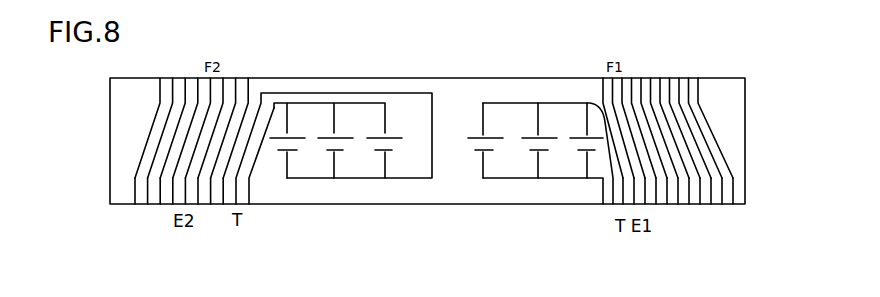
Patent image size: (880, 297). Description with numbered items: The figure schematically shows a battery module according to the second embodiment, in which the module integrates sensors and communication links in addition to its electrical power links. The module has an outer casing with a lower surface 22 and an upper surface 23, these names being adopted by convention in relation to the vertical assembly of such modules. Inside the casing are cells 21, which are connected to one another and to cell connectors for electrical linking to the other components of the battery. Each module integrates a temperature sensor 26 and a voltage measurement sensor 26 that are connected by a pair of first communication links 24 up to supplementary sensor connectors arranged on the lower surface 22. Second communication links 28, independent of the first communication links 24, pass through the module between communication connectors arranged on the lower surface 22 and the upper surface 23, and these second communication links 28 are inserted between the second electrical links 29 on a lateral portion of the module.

The cells 21 is at (473, 133).
The lower surface 22 is at (457, 204).
The upper surface 23 is at (319, 78).
The first communication links 24 is at (240, 170).
The temperature sensor and voltage measurement sensor 26 is at (424, 93).
The second communication links 28 is at (150, 132).
The second electrical links 29 is at (147, 173).